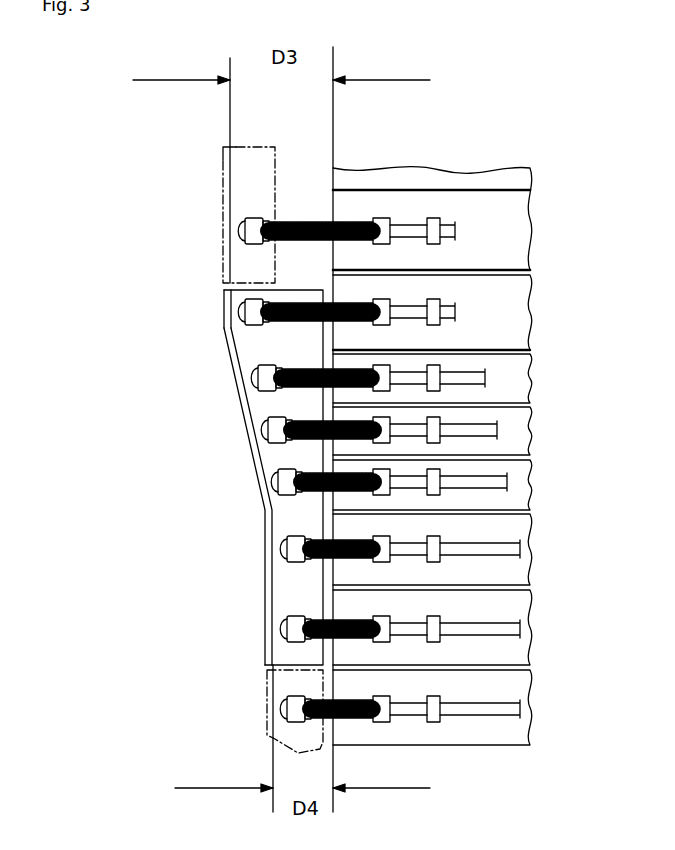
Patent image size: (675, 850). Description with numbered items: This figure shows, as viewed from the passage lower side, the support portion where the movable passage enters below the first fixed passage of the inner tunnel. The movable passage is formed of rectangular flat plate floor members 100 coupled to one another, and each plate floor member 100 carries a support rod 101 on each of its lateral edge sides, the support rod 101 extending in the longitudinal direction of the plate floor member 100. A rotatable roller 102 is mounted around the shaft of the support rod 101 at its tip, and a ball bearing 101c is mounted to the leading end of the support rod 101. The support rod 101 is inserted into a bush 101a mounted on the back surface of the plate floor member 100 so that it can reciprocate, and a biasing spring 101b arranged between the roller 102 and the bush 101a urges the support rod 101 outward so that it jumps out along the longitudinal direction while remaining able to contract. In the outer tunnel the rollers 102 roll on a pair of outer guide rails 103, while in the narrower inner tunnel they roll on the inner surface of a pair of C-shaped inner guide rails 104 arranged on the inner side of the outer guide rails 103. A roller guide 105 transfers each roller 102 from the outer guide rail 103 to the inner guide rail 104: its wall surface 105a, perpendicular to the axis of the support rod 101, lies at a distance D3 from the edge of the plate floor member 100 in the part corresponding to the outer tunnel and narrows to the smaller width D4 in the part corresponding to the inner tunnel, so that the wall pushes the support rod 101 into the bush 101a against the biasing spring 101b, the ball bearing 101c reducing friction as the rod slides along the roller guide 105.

The plate floor member 100 is at (473, 202).
The support rod 101 is at (376, 203).
The bush 101a is at (378, 246).
The biasing spring 101b is at (353, 222).
The ball bearing 101c is at (236, 231).
The roller 102 is at (200, 218).
The outer guide rail 103 is at (225, 172).
The inner guide rail 104 is at (275, 688).
The roller guide 105 is at (227, 474).
The wall surface 105a is at (236, 368).